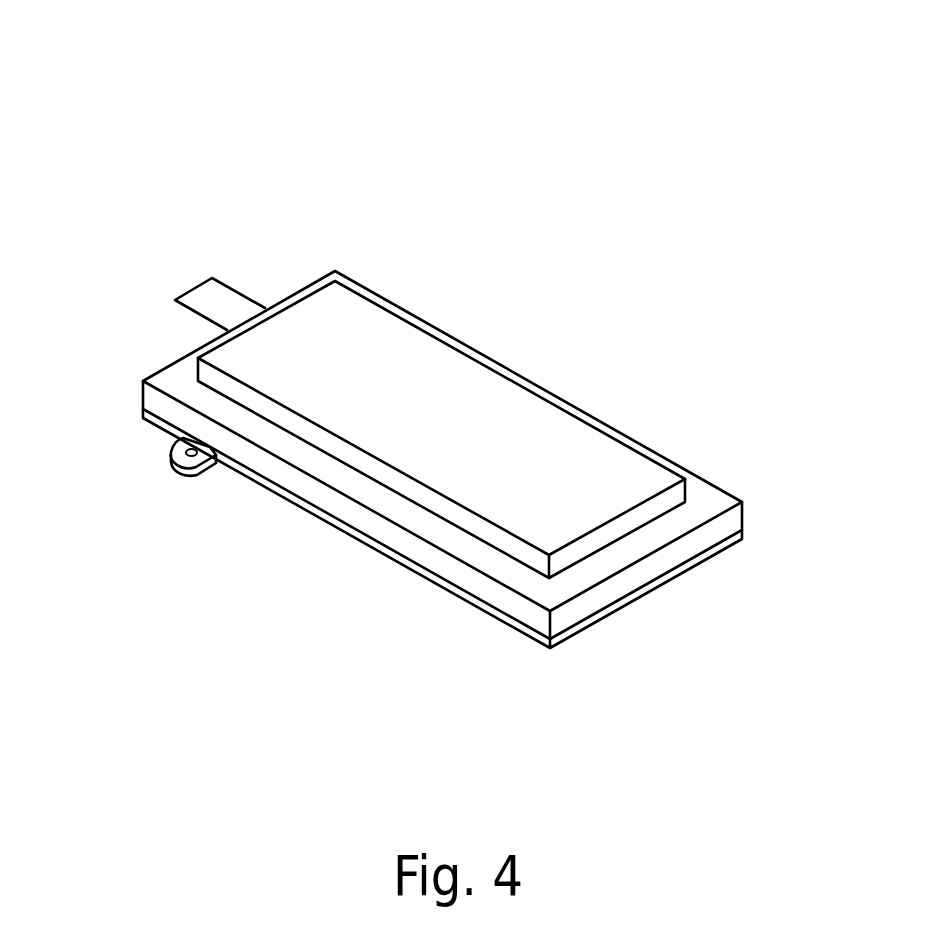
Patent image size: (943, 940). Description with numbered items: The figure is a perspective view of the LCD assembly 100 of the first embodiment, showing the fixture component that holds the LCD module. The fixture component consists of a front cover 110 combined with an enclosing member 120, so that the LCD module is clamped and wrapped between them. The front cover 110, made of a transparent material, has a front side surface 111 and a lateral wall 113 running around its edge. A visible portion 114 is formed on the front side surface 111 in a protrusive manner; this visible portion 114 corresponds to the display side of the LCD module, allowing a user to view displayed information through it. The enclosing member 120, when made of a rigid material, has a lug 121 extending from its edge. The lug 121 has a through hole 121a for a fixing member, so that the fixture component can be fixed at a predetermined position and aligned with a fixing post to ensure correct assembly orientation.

The LCD assembly 100 is at (175, 187).
The front cover 110 is at (670, 418).
The front side surface 111 is at (703, 503).
The lateral wall 113 is at (623, 582).
The visible portion 114 is at (570, 408).
The enclosing member 120 is at (483, 610).
The lug 121 is at (196, 472).
The through hole 121a is at (183, 452).